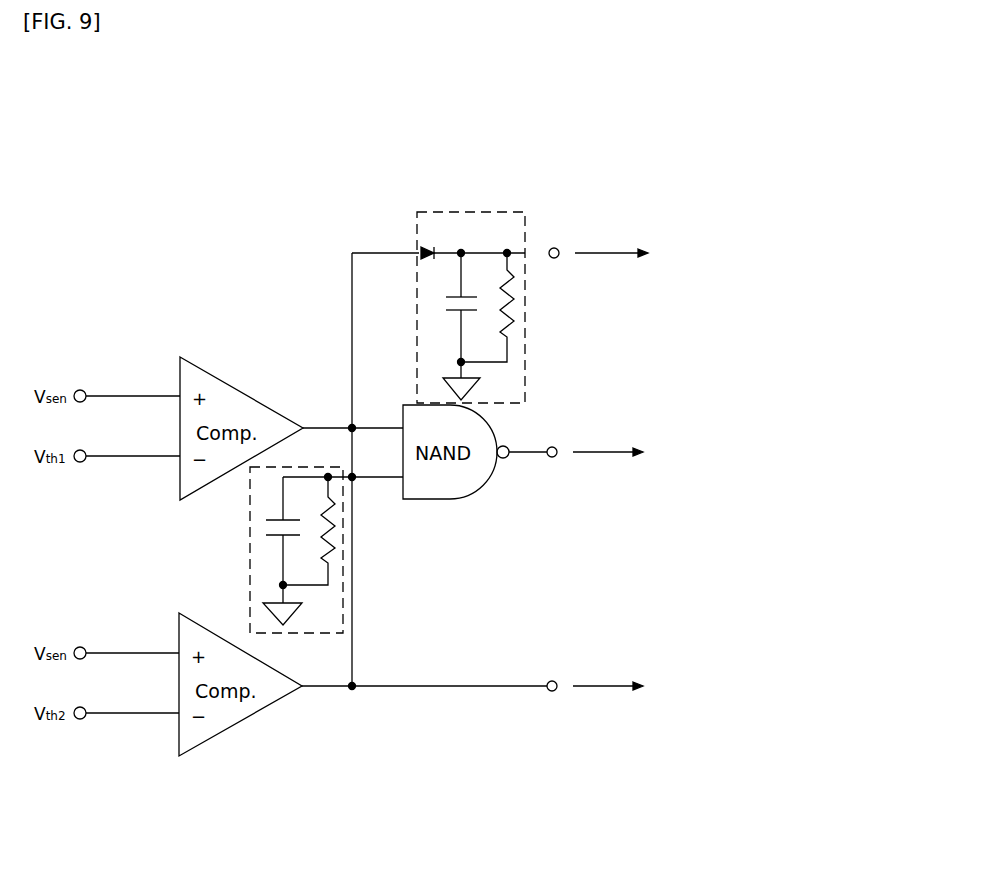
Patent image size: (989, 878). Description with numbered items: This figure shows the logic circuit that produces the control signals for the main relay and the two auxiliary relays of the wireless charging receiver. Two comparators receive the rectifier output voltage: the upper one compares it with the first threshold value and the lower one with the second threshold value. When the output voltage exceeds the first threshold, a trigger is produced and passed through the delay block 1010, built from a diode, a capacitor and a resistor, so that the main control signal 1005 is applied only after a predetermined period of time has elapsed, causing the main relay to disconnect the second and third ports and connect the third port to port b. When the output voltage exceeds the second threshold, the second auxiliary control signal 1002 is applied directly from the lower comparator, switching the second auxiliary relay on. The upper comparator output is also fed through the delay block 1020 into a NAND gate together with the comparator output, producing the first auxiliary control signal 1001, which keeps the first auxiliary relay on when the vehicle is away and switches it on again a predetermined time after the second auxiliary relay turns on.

The main control signal 1005 is at (603, 252).
The first auxiliary control signal 1001 is at (601, 451).
The second auxiliary control signal 1002 is at (601, 685).
The delay block 1010 is at (485, 210).
The delay block 1020 is at (296, 467).